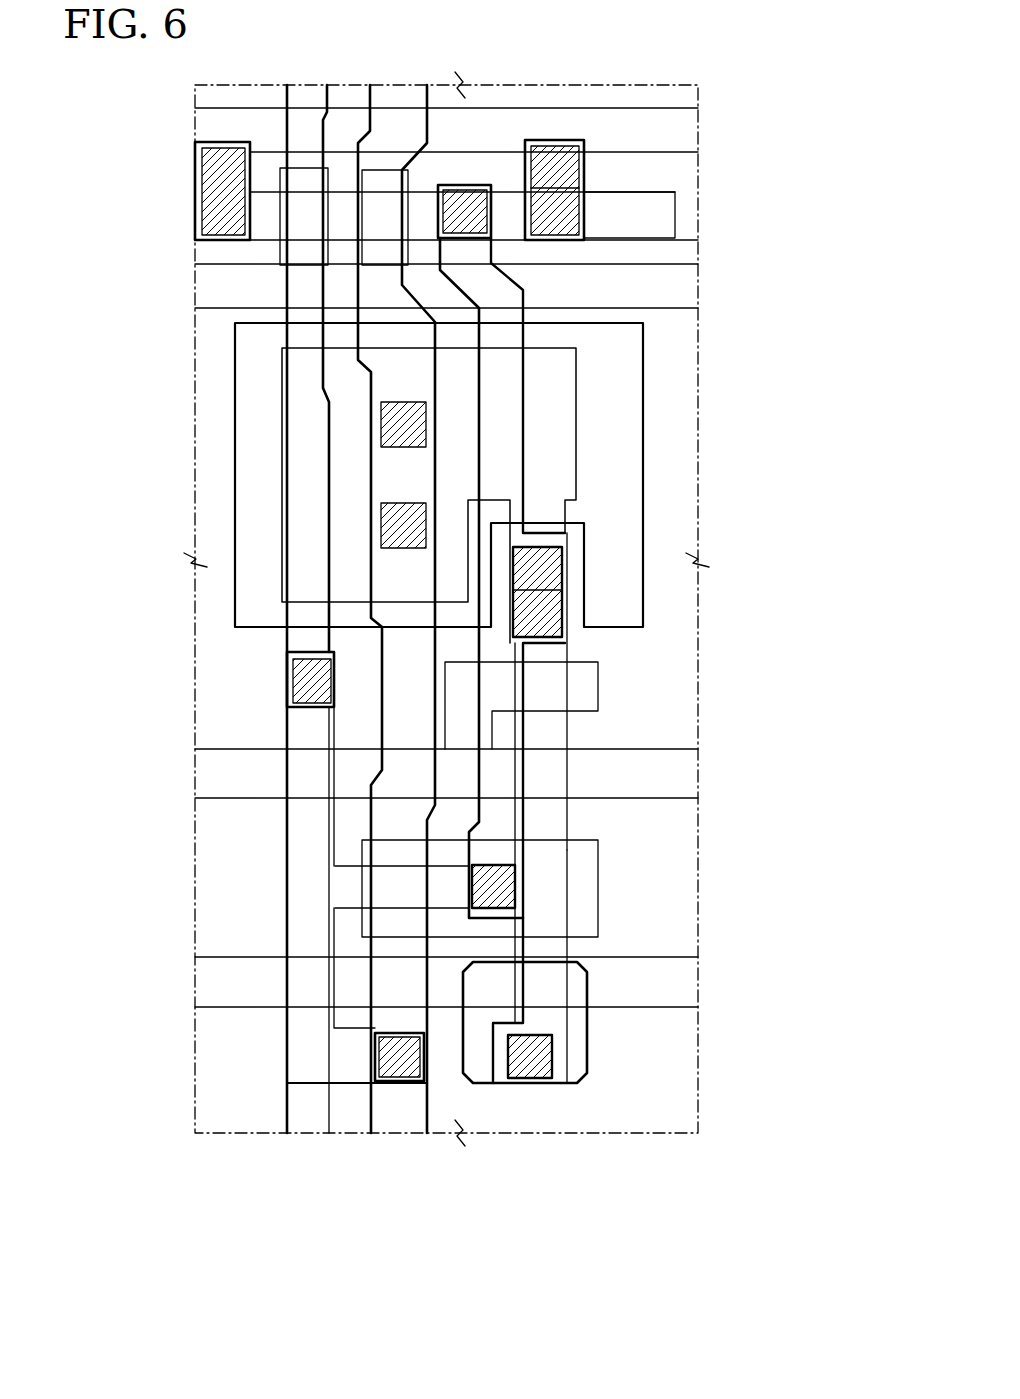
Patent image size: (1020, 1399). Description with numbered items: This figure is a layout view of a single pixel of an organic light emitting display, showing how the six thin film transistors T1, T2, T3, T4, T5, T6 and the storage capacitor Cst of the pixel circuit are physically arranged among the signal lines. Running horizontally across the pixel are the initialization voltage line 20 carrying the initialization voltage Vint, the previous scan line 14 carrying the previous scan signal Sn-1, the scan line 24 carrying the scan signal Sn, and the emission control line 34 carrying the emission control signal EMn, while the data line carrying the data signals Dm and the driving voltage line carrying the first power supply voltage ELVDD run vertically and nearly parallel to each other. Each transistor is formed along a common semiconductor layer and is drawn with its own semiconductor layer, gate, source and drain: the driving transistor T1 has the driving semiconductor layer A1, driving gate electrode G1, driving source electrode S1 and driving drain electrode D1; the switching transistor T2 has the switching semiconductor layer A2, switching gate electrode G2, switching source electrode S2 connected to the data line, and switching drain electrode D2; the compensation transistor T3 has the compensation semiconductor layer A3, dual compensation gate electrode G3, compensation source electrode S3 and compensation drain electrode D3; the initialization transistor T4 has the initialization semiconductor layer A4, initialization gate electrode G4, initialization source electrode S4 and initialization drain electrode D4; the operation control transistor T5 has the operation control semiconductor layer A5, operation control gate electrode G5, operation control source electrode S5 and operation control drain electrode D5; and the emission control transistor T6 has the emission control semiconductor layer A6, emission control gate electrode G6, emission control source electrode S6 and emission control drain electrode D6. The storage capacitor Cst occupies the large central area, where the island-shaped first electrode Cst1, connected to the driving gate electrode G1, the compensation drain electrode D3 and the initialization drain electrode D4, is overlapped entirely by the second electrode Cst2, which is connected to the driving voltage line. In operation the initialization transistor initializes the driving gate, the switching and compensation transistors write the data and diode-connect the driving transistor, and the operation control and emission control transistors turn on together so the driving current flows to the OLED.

The initialization voltage line 20 is at (578, 108).
The previous scan line 14 is at (680, 308).
The scan line 24 is at (680, 800).
The emission control line 34 is at (680, 1008).
The data signal Dm is at (308, 574).
The first power supply voltage ELVDD is at (397, 574).
The initialization voltage Vint is at (518, 137).
The previous scan signal Sn-1 is at (494, 283).
The scan signal Sn is at (739, 776).
The emission control signal EMn is at (494, 976).
The driving thin film transistor T1 is at (112, 848).
The driving drain electrode D1 is at (517, 822).
The driving gate electrode G1 is at (362, 852).
The driving semiconductor layer A1 is at (397, 866).
The driving source electrode S1 is at (347, 910).
The switching thin film transistor T2 is at (112, 685).
The switching source electrode S2 is at (310, 650).
The switching semiconductor layer A2 is at (332, 722).
The switching gate electrode G2 is at (245, 749).
The switching drain electrode D2 is at (332, 813).
The compensation thin film transistor T3 is at (773, 618).
The compensation drain electrode D3 is at (567, 653).
The compensation gate electrode G3 is at (599, 685).
The compensation semiconductor layer A3 is at (567, 729).
The compensation source electrode S3 is at (567, 818).
The initialization thin film transistor T4 is at (112, 163).
The initialization drain electrode D4 is at (422, 193).
The initialization gate electrode G4 is at (278, 208).
The initialization source electrode S4 is at (267, 239).
The initialization semiconductor layer A4 is at (343, 238).
The operation control thin film transistor T5 is at (380, 1194).
The operation control gate electrode G5 is at (266, 1007).
The operation control drain electrode D5 is at (300, 1007).
The operation control semiconductor layer A5 is at (334, 1015).
The operation control source electrode S5 is at (352, 1082).
The emission control thin film transistor T6 is at (633, 1194).
The emission control drain electrode D6 is at (555, 1047).
The emission control semiconductor layer A6 is at (567, 980).
The emission control gate electrode G6 is at (590, 1007).
The emission control source electrode S6 is at (567, 943).
The storage capacitor Cst is at (102, 435).
The first electrode Cst1 is at (282, 446).
The second electrode Cst2 is at (235, 500).